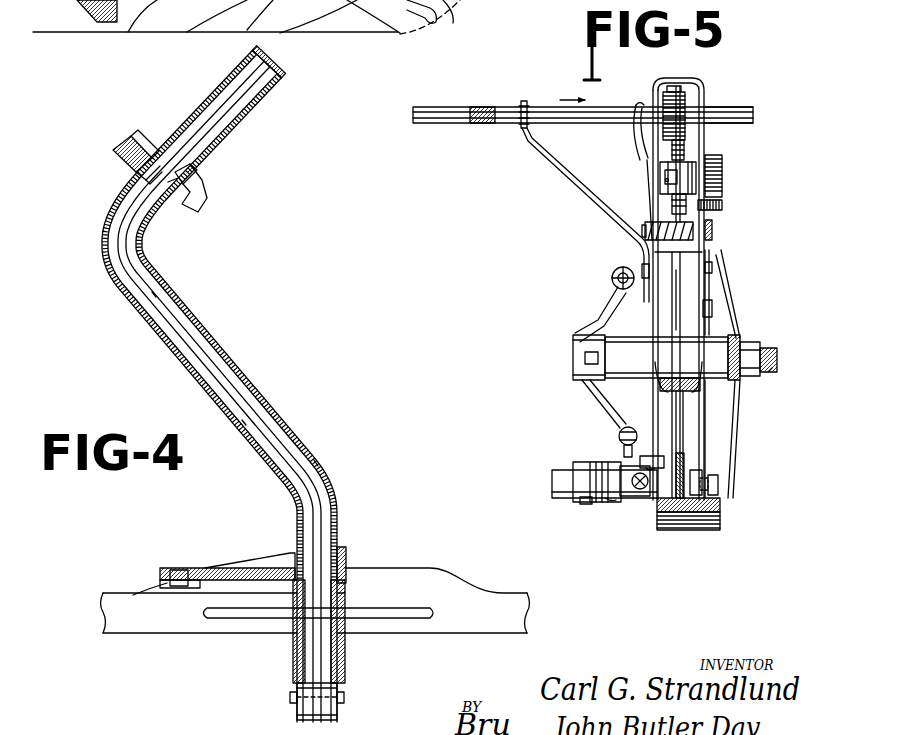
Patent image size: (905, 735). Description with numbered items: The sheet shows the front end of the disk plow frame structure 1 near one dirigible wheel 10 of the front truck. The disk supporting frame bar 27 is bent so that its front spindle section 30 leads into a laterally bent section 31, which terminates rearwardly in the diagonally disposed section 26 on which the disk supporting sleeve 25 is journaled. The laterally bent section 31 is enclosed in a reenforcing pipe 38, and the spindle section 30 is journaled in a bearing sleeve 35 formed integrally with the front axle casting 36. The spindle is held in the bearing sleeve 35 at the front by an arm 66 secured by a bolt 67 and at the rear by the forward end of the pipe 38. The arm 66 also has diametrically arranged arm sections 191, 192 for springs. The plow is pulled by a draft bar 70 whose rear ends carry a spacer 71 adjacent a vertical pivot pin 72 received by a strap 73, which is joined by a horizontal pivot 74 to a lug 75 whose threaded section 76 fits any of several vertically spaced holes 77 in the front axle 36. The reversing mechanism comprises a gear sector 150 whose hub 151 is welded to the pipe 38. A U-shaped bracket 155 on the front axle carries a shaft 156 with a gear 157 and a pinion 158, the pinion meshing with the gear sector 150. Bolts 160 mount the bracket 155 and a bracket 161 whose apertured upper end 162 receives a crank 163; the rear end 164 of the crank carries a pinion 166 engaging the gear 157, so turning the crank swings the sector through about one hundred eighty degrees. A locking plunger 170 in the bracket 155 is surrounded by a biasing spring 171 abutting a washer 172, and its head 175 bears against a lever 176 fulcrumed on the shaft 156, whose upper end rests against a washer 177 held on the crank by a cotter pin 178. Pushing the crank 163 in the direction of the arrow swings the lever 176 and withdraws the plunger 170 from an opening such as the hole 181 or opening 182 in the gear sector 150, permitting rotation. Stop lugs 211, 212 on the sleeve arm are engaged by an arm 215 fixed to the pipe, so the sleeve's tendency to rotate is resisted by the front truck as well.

In FIG. 4, the frame structure 1 is at (229, 73).
In FIG. 4, the dirigible wheel 10 is at (98, 22).
In FIG. 4, the disk supporting sleeve 25 is at (233, 131).
In FIG. 4, the diagonally disposed section 26 is at (245, 92).
In FIG. 4, the disk supporting frame bar 27 is at (172, 324).
In FIG. 5, the disk supporting frame bar 27 is at (775, 372).
In FIG. 4, the front spindle section 30 is at (345, 593).
In FIG. 5, the front spindle section 30 is at (770, 352).
In FIG. 4, the laterally bent section 31 is at (243, 422).
In FIG. 4, the bearing sleeve 35 is at (346, 662).
In FIG. 5, the bearing sleeve 35 is at (628, 345).
In FIG. 4, the front axle casting 36 is at (404, 622).
In FIG. 5, the front axle casting 36 is at (692, 455).
In FIG. 4, the reenforcing pipe 38 is at (318, 464).
In FIG. 5, the reenforcing pipe 38 is at (746, 342).
In FIG. 4, the arm 66 is at (337, 716).
In FIG. 5, the arm 66 is at (582, 380).
In FIG. 4, the bolt 67 is at (346, 698).
In FIG. 5, the draft bar 70 is at (572, 470).
In FIG. 5, the spacer 71 is at (578, 482).
In FIG. 5, the vertical pivot pin 72 is at (612, 500).
In FIG. 5, the strap 73 is at (628, 497).
In FIG. 5, the horizontal pivot 74 is at (642, 490).
In FIG. 5, the lug 75 is at (644, 470).
In FIG. 5, the threaded section 76 is at (704, 470).
In FIG. 5, the vertically spaced holes 77 is at (672, 405).
In FIG. 4, the gear sector 150 is at (218, 582).
In FIG. 5, the gear sector 150 is at (722, 240).
In FIG. 4, the hub 151 is at (346, 565).
In FIG. 5, the hub 151 is at (734, 345).
In FIG. 5, the U-shaped bracket 155 is at (704, 92).
In FIG. 5, the shaft 156 is at (656, 178).
In FIG. 5, the gear 157 is at (684, 150).
In FIG. 5, the pinion 158 is at (718, 172).
In FIG. 5, the bolts 160 is at (641, 270).
In FIG. 5, the bracket 161 is at (556, 168).
In FIG. 5, the apertured upper end 162 is at (523, 101).
In FIG. 5, the crank 163 is at (548, 112).
In FIG. 5, the rear end of crank 164 is at (715, 108).
In FIG. 5, the pinion 166 is at (674, 95).
In FIG. 5, the locking plunger 170 is at (668, 206).
In FIG. 5, the biasing spring 171 is at (676, 243).
In FIG. 5, the washer 172 is at (718, 214).
In FIG. 5, the head 175 is at (642, 231).
In FIG. 5, the lever 176 is at (650, 140).
In FIG. 5, the washer 177 is at (639, 108).
In FIG. 5, the cotter pin 178 is at (632, 115).
In FIG. 5, the hole 181 is at (715, 480).
In FIG. 5, the opening 182 is at (714, 232).
In FIG. 5, the arm section 191 is at (606, 297).
In FIG. 5, the arm section 192 is at (608, 410).
In FIG. 4, the stop lug 211 is at (121, 157).
In FIG. 4, the stop lug 212 is at (192, 213).
In FIG. 4, the arm 215 is at (138, 174).